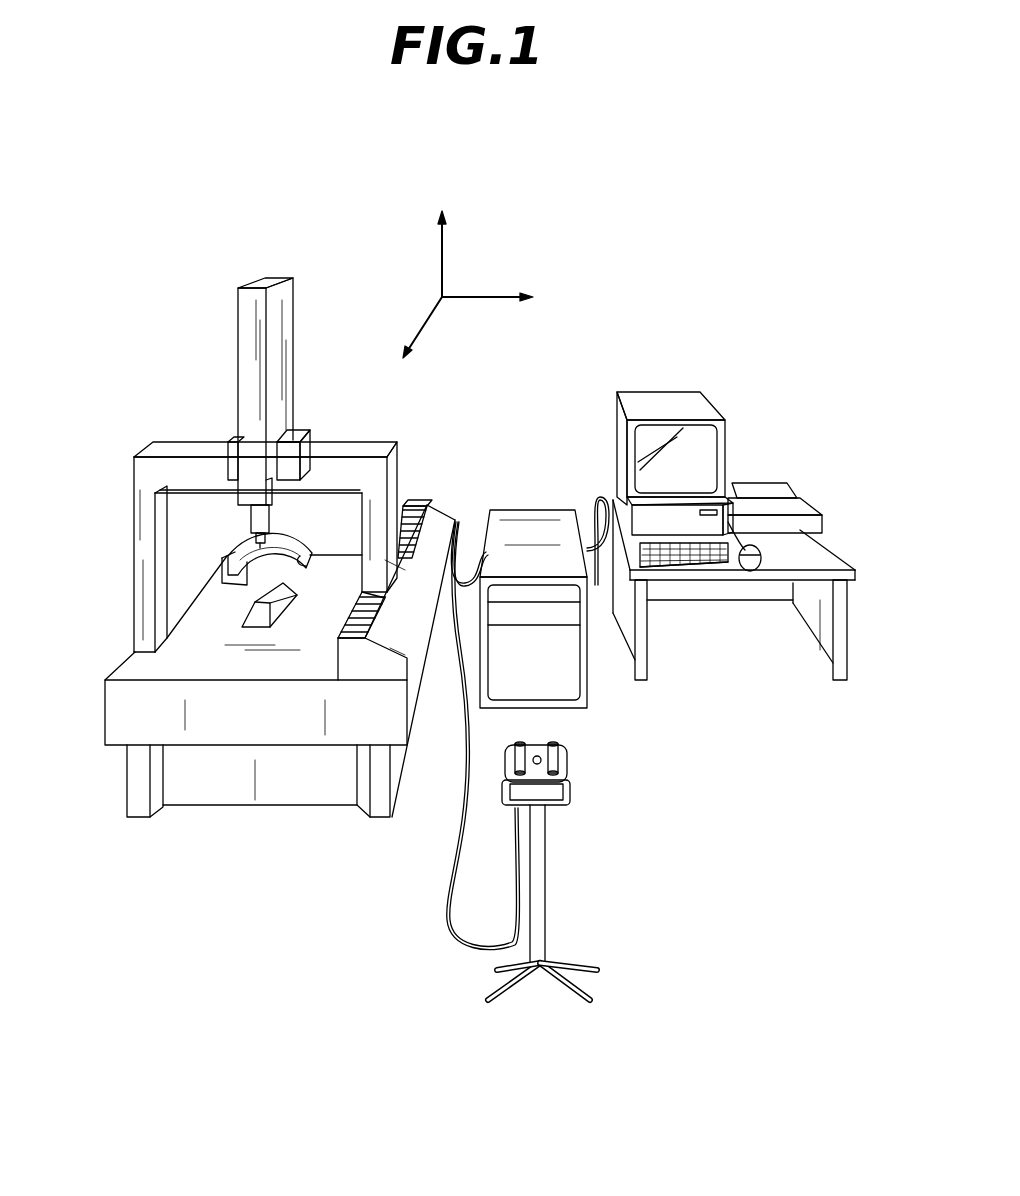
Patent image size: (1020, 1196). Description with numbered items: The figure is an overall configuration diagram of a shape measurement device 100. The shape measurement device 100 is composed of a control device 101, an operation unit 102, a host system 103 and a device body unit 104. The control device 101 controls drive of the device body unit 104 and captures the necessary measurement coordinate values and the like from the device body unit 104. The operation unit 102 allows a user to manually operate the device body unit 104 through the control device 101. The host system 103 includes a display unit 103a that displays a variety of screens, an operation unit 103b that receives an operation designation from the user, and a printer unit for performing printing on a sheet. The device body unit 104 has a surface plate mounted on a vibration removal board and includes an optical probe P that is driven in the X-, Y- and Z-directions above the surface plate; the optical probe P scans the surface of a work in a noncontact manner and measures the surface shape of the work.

The shape measurement device 100 is at (628, 207).
The control device 101 is at (538, 518).
The operation unit 102 is at (581, 780).
The host system 103 is at (726, 382).
The display unit 103a is at (697, 465).
The operation unit 103b is at (703, 563).
The device body unit 104 is at (308, 304).
The optical probe P is at (222, 563).